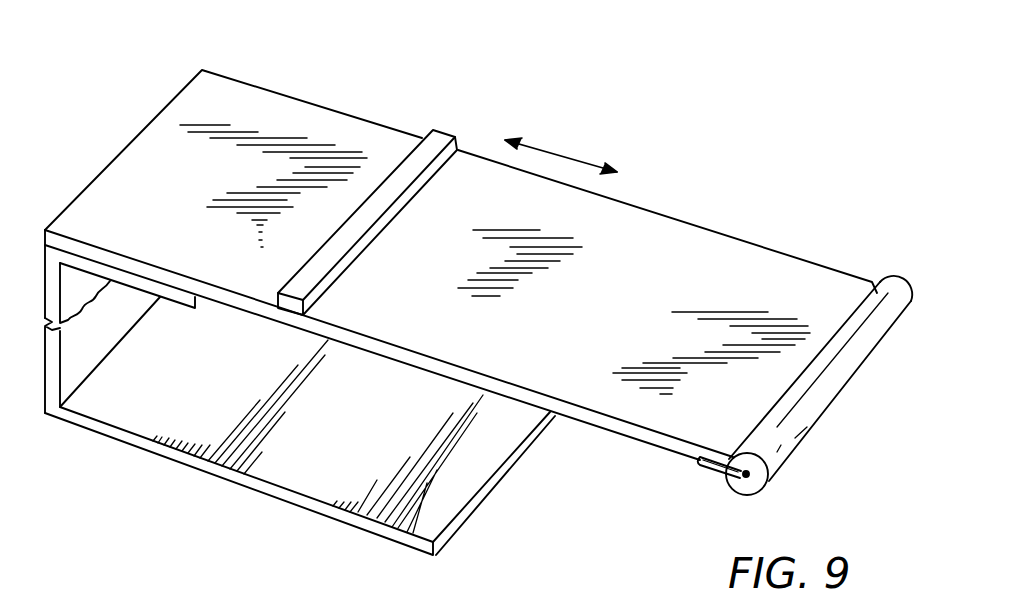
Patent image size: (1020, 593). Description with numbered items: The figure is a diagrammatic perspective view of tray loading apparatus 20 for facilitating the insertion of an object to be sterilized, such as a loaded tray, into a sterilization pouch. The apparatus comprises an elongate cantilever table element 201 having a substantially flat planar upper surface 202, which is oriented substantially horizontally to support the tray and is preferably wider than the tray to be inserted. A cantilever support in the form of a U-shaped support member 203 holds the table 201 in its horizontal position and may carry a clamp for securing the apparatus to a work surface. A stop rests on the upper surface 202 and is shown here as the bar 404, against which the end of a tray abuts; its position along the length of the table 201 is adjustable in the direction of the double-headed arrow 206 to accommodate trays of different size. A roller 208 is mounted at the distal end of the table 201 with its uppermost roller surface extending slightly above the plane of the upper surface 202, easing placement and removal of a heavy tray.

The tray loading apparatus 20 is at (148, 104).
The cantilever table element 201 is at (630, 435).
The upper surface 202 is at (675, 298).
The U-shaped support member 203 is at (473, 508).
The arrow 206 is at (563, 157).
The roller 208 is at (797, 437).
The bar 404 is at (438, 138).